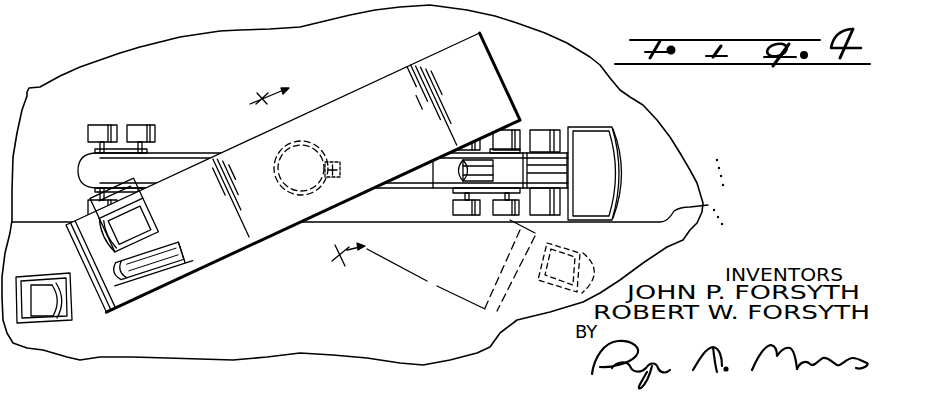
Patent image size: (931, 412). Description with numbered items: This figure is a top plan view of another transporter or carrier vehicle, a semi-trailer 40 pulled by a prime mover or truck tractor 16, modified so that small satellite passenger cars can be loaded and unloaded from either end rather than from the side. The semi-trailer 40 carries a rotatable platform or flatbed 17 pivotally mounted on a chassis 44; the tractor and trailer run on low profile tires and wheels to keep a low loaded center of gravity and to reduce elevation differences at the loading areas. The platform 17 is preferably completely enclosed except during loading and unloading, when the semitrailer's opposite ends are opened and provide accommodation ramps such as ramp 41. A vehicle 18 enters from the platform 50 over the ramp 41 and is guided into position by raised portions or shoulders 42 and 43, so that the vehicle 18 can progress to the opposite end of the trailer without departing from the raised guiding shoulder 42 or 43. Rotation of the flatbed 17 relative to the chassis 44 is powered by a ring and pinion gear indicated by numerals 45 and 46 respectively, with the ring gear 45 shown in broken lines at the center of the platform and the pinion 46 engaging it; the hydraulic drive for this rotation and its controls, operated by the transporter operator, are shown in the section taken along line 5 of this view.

The section line 5- 5 is at (367, 185).
The truck tractor 16 is at (616, 127).
The rotatable platform or flatbed 17 is at (186, 289).
The vehicle 18 is at (40, 300).
The semi-trailer 40 is at (393, 68).
The ramp 41 is at (109, 320).
The raised portion or shoulder 42 is at (153, 270).
The raised portion or shoulder 43 is at (168, 210).
The chassis 44 is at (182, 153).
The ring gear 45 is at (300, 142).
The pinion gear 46 is at (343, 169).
The platform 50 is at (708, 205).